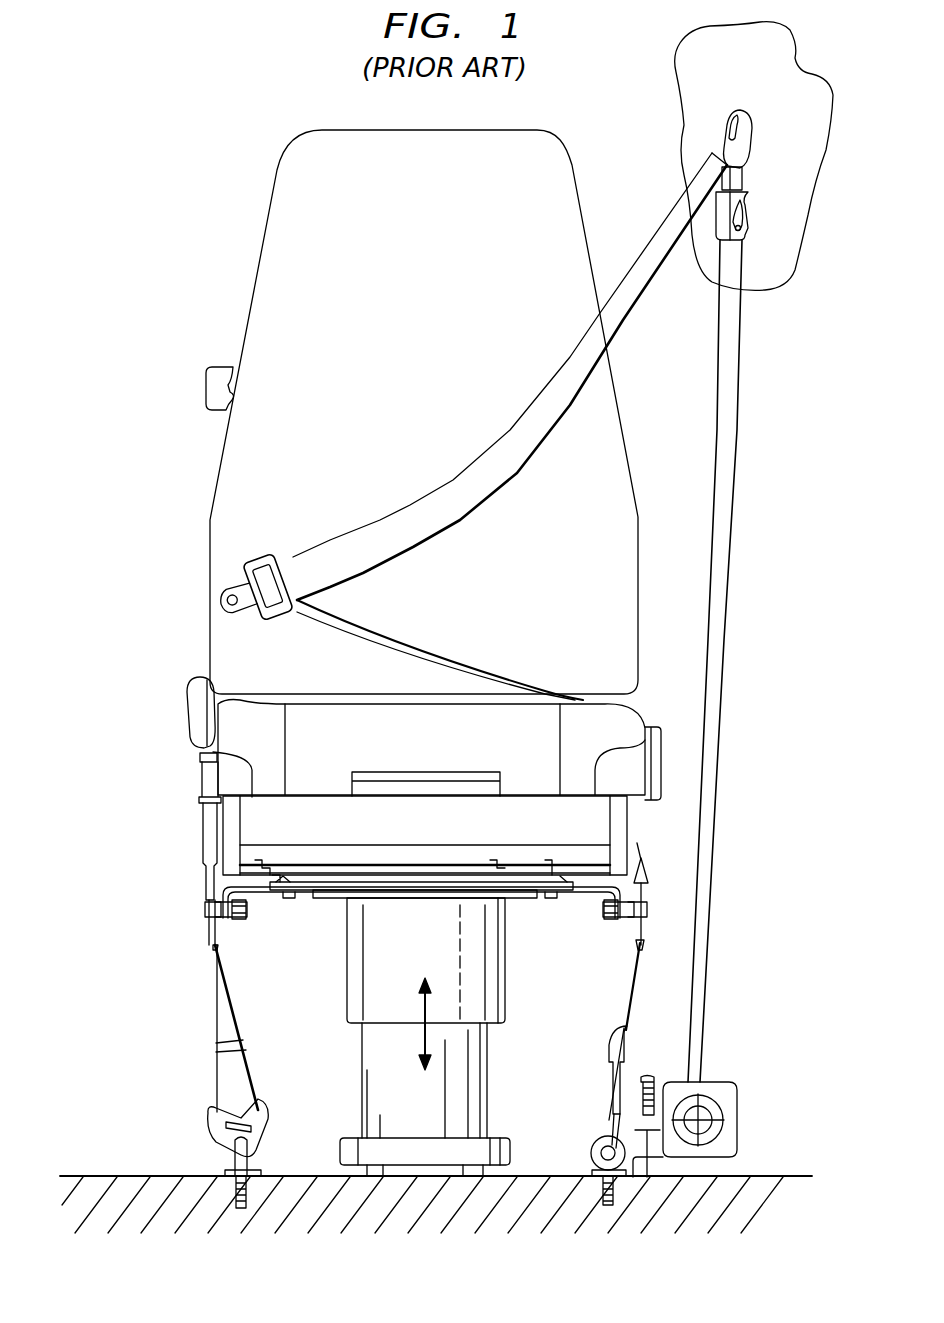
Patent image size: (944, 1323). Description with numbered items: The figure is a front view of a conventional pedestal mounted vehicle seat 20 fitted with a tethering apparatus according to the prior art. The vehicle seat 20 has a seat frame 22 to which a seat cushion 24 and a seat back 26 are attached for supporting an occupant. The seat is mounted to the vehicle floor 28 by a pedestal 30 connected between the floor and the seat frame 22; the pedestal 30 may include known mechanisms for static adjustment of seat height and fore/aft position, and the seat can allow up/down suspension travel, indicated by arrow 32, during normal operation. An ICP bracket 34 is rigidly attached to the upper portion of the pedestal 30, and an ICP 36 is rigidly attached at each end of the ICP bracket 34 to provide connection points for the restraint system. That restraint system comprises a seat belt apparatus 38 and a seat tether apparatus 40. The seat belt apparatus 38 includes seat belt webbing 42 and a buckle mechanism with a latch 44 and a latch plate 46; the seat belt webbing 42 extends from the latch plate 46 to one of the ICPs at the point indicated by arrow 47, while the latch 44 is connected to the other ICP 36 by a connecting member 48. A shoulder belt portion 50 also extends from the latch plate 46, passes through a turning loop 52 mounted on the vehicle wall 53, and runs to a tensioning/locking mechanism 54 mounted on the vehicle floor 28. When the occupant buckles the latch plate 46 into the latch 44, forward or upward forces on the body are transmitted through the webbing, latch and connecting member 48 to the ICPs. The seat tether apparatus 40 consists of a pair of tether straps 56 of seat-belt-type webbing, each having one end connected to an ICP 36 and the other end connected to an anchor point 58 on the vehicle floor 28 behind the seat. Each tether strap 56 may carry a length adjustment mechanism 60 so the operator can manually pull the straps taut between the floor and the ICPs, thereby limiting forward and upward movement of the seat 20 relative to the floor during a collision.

The pedestal mounted vehicle seat 20 is at (150, 386).
The seat frame 22 is at (332, 805).
The seat cushion 24 is at (364, 704).
The seat back 26 is at (258, 256).
The vehicle floor 28 is at (112, 1176).
The pedestal 30 is at (347, 976).
The arrow indicating up/down suspension travel 32 is at (425, 1042).
The ICP bracket 34 is at (262, 895).
The ICP 36 is at (250, 920).
The seat belt apparatus 38 is at (740, 706).
The seat tether apparatus 40 is at (124, 1044).
The seat belt webbing 42 is at (476, 678).
The latch 44 is at (184, 740).
The latch plate 46 is at (270, 560).
The arrow indicating webbing connection point 47 is at (650, 858).
The connecting member 48 is at (200, 782).
The shoulder belt portion 50 is at (322, 551).
The turning loop 52 is at (755, 138).
The vehicle wall 53 is at (748, 80).
The tensioning/locking mechanism 54 is at (735, 1138).
The tether straps 56 is at (216, 1016).
The anchor point 58 is at (233, 1160).
The length adjustment mechanisms 60 is at (218, 1055).